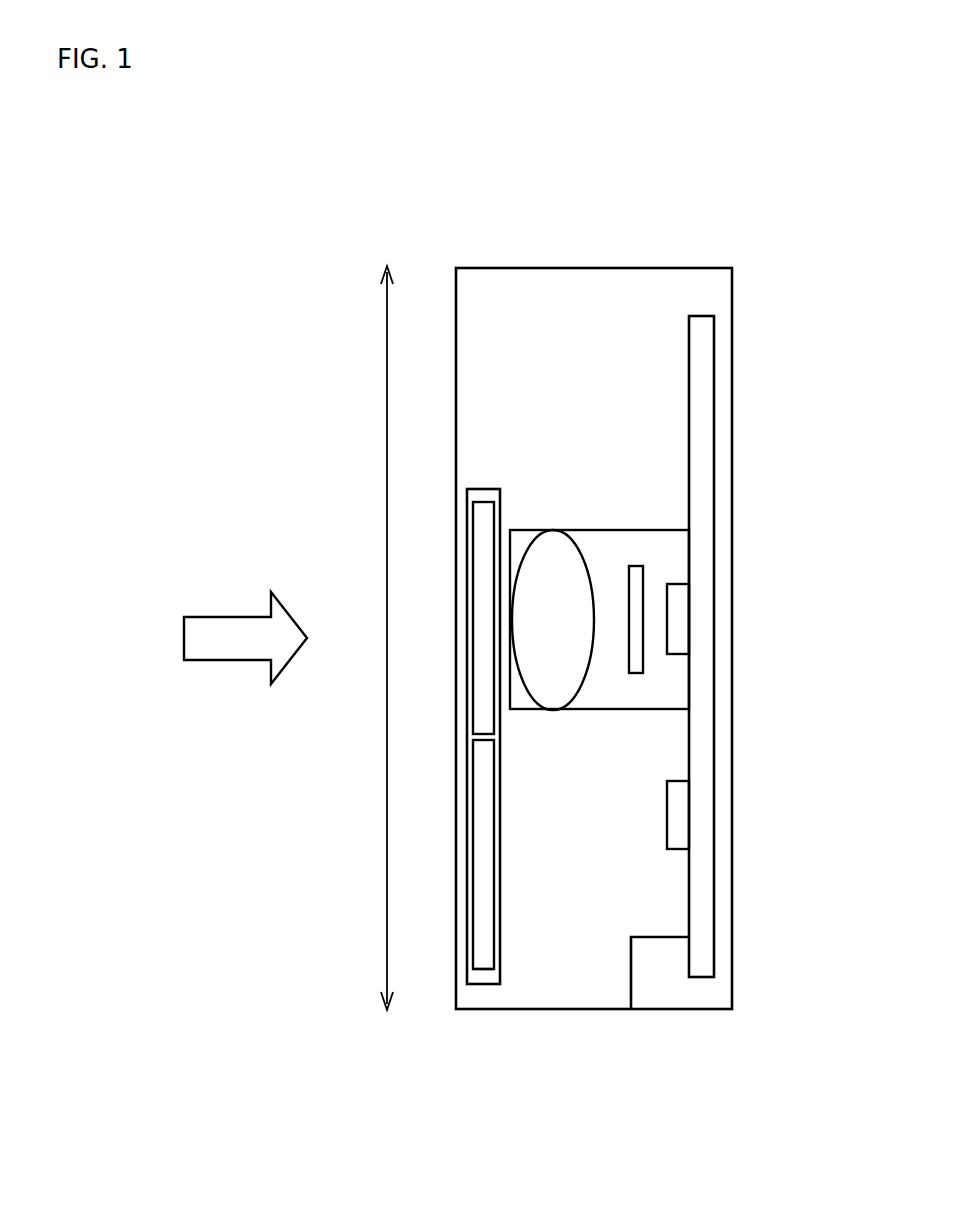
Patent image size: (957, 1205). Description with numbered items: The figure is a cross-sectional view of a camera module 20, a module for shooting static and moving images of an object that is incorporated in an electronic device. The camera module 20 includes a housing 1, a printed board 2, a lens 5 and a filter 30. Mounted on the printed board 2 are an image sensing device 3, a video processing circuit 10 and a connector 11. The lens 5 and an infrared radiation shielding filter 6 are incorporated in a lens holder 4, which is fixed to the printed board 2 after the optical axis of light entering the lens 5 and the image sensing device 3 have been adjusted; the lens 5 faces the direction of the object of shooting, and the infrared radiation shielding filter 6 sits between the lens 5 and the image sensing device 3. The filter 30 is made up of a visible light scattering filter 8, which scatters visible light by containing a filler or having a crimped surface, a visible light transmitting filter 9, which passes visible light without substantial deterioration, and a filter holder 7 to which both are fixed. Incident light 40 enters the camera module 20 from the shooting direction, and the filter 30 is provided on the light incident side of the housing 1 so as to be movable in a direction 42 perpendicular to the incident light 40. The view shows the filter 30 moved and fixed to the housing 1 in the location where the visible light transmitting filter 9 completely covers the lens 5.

The housing 1 is at (658, 278).
The printed board 2 is at (703, 340).
The image sensing device 3 is at (676, 620).
The lens holder 4 is at (586, 539).
The lens 5 is at (547, 539).
The infrared radiation shielding filter 6 is at (633, 575).
The filter holder 7 is at (481, 977).
The visible light scattering filter 8 is at (481, 857).
The visible light transmitting filter 9 is at (481, 617).
The video processing circuit 10 is at (678, 813).
The connector 11 is at (678, 993).
The camera module 20 is at (841, 277).
The filter 30 is at (484, 489).
The incident light 40 is at (232, 617).
The direction 42 is at (387, 405).